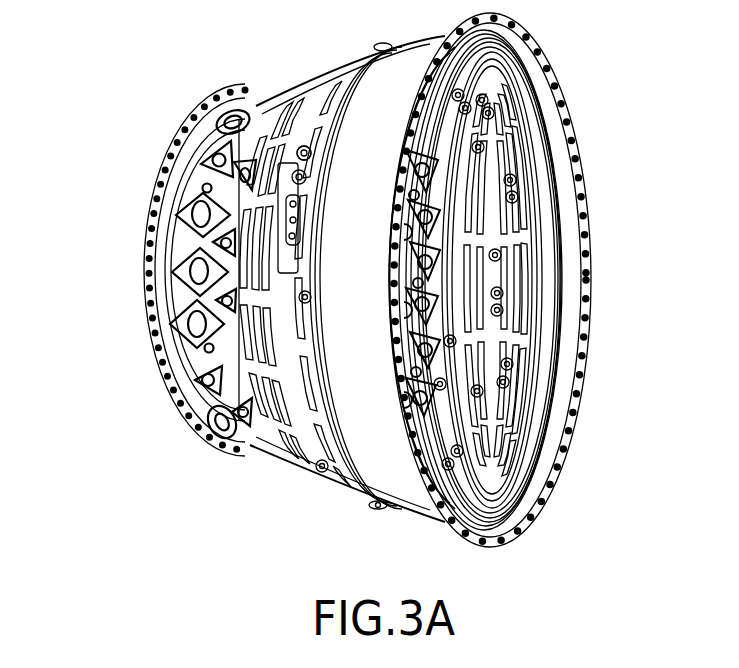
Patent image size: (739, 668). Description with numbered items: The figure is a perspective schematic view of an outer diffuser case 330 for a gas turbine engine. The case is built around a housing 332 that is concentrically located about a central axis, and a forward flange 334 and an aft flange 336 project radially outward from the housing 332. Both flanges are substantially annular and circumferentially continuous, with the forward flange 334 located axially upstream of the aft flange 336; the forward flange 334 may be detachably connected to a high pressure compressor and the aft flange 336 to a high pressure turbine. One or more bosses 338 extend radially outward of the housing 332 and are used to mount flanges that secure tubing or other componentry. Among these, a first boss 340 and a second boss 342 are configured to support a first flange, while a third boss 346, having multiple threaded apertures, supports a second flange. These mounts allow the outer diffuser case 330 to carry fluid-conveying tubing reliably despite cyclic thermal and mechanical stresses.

The outer diffuser case 330 is at (118, 107).
The housing 332 is at (326, 73).
The forward flange 334 is at (150, 284).
The aft flange 336 is at (588, 290).
The bosses 338 is at (298, 150).
The first boss 340 is at (300, 147).
The second boss 342 is at (293, 174).
The third boss 346 is at (286, 207).